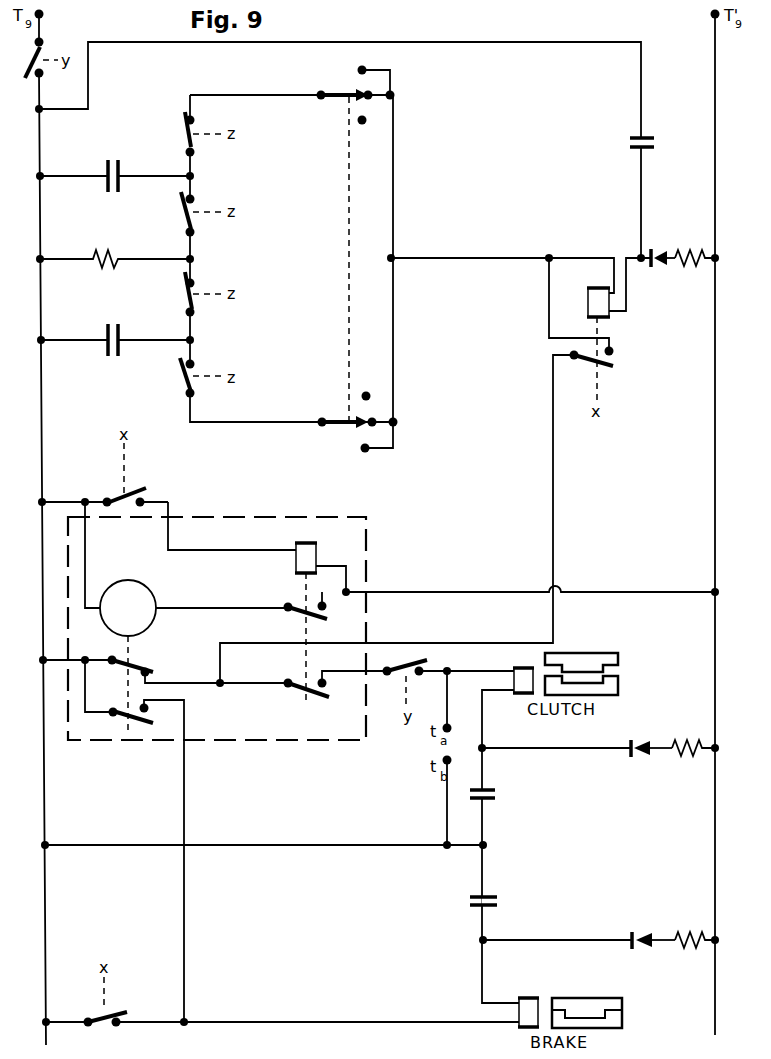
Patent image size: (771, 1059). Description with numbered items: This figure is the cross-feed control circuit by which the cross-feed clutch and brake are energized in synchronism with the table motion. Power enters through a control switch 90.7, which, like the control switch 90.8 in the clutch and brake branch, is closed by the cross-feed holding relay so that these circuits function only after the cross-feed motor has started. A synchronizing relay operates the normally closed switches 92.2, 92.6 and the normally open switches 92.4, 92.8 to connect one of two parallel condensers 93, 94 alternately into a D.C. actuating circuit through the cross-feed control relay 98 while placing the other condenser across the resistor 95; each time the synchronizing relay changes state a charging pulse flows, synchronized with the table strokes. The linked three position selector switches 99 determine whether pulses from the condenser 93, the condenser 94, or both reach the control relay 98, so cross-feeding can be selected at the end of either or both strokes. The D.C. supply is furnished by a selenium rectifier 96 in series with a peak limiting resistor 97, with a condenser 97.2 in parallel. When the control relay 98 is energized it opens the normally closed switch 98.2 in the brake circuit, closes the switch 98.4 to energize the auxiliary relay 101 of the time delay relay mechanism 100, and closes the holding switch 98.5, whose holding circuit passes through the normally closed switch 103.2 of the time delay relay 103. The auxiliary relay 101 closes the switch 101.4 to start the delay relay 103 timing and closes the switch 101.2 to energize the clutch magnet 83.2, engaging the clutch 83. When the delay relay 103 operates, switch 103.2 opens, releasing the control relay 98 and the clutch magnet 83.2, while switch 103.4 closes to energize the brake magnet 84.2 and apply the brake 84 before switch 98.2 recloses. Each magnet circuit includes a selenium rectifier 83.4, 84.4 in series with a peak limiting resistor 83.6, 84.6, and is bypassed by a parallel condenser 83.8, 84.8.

The control switch 90.7 is at (45, 52).
The condenser 93 is at (120, 172).
The resistor 95 is at (117, 256).
The condenser 94 is at (120, 330).
The normally closed switch 92.2 is at (197, 145).
The normally open switch 92.4 is at (197, 226).
The normally closed switch 92.6 is at (198, 305).
The normally open switch 92.8 is at (198, 388).
The three position selector switches 99 is at (349, 248).
The condenser 97.2 is at (630, 146).
The selenium rectifier 96 is at (657, 268).
The peak limiting resistor 97 is at (701, 268).
The cross-feed control relay 98 is at (588, 303).
The holding switch 98.5 is at (617, 359).
The normally open switch 98.4 is at (120, 492).
The normally closed switch 98.2 is at (108, 1028).
The time delay relay mechanism 100 is at (368, 535).
The auxiliary relay 101 is at (310, 556).
The normally open switch 101.4 is at (297, 614).
The normally open switch 101.2 is at (321, 700).
The time delay relay 103 is at (143, 595).
The normally closed switch 103.2 is at (145, 663).
The switch 103.4 is at (135, 722).
The control switch 90.8 is at (410, 656).
The clutch magnet 83.2 is at (518, 665).
The clutch 83 is at (623, 674).
The selenium rectifier 83.4 is at (645, 760).
The peak limiting resistor 83.6 is at (700, 758).
The condenser 83.8 is at (498, 794).
The condenser 84.8 is at (492, 894).
The selenium rectifier 84.4 is at (634, 918).
The peak limiting resistor 84.6 is at (700, 932).
The brake magnet 84.2 is at (528, 997).
The brake 84 is at (624, 1007).